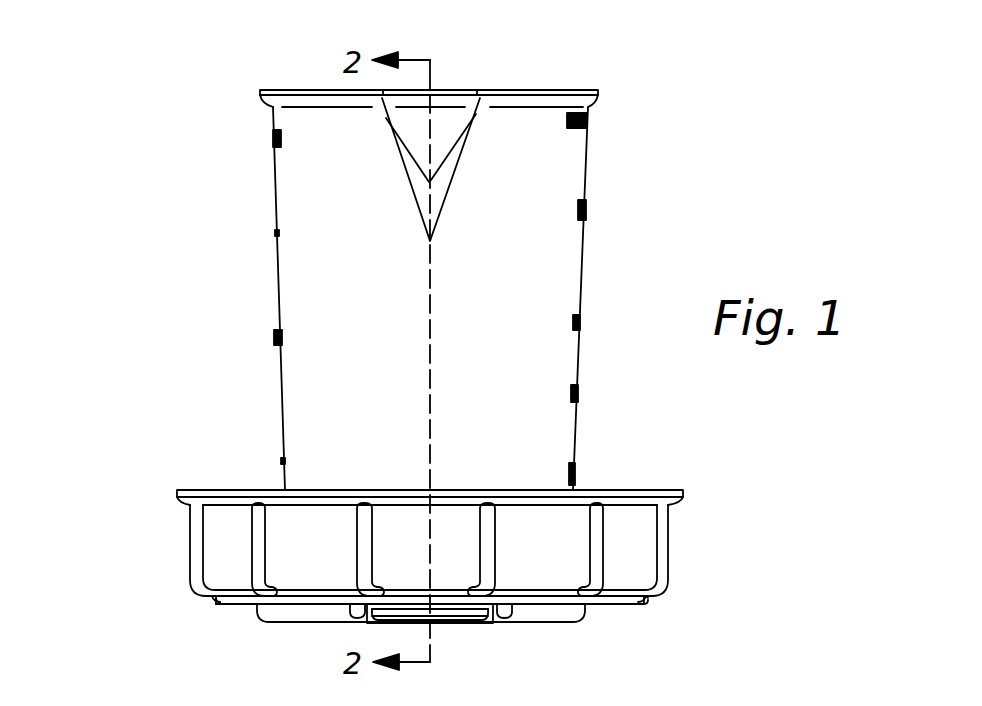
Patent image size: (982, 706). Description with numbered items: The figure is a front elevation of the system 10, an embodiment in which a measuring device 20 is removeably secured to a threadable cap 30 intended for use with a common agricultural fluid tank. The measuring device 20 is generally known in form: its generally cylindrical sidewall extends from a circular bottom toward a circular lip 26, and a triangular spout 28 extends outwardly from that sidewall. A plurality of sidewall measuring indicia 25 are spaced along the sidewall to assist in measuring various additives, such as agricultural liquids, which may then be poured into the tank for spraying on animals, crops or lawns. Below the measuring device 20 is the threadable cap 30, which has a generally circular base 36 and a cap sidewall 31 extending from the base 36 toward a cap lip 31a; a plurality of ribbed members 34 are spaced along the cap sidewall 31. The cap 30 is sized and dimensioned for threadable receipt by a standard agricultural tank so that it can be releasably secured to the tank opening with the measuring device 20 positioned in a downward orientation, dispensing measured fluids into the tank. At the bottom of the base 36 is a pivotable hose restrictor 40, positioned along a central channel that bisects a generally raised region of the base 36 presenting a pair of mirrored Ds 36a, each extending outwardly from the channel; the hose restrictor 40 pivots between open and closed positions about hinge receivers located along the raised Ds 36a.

The system 10 is at (123, 193).
The measuring device 20 is at (538, 205).
The sidewall measuring indicia 25 is at (587, 122).
The circular lip 26 is at (542, 98).
The triangular spout 28 is at (443, 145).
The threadable cap 30 is at (697, 533).
The cap sidewall 31 is at (223, 552).
The cap lip 31a is at (673, 489).
The ribbed members 34 is at (257, 586).
The circular base 36 is at (632, 602).
The mirrored Ds 36a is at (583, 620).
The hose restrictor 40 is at (473, 630).